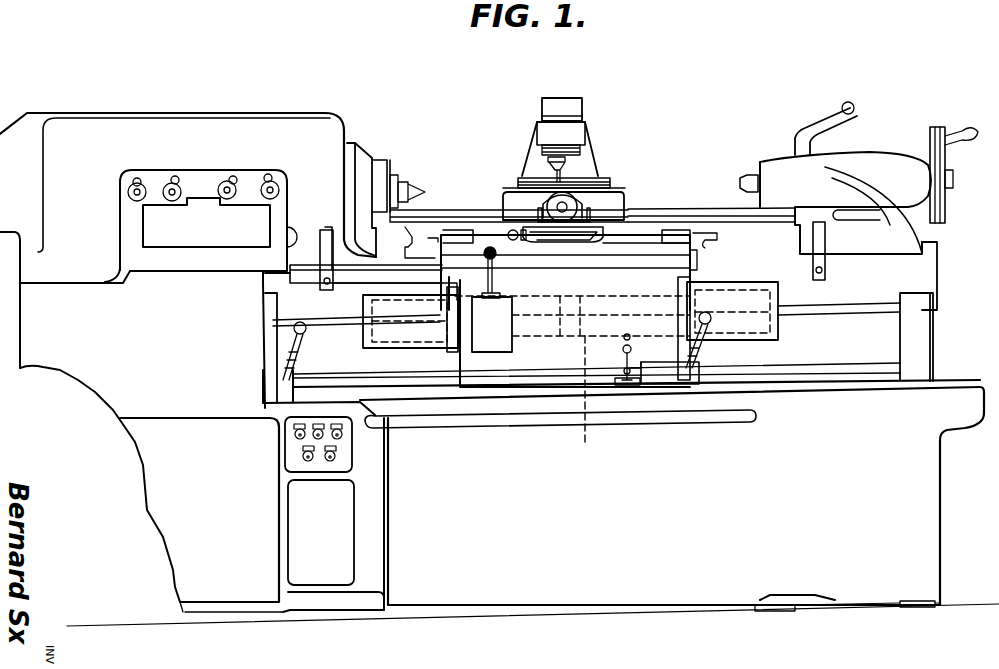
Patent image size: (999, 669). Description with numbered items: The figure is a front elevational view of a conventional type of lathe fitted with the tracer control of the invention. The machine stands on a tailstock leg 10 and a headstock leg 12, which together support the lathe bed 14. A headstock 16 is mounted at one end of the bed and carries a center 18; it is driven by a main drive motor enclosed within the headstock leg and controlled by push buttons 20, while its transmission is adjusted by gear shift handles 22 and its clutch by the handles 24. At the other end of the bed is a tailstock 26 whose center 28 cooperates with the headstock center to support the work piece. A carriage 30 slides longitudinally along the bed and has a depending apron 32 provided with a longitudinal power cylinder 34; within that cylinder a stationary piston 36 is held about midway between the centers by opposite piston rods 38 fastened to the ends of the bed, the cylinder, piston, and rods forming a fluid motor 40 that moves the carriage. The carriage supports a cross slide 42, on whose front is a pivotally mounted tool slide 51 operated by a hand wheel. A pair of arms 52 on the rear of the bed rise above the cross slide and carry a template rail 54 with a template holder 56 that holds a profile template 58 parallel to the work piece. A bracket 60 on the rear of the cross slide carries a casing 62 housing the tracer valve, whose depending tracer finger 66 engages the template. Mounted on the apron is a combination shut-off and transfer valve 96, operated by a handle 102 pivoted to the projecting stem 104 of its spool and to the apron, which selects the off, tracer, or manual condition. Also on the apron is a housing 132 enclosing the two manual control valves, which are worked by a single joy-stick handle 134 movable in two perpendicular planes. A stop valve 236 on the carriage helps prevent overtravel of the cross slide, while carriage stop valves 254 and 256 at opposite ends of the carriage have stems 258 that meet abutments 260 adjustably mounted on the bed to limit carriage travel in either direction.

The tailstock leg 10 is at (847, 585).
The headstock leg 12 is at (235, 592).
The lathe bed 14 is at (930, 287).
The headstock 16 is at (245, 117).
The headstock center 18 is at (420, 190).
The push buttons 20 is at (297, 434).
The gear shift handles 22 is at (266, 176).
The clutch handles 24 is at (305, 337).
The tailstock 26 is at (888, 158).
The tailstock center 28 is at (741, 183).
The carriage 30 is at (660, 210).
The apron 32 is at (545, 378).
The longitudinal power cylinder 34 is at (413, 352).
The stationary piston 36 is at (588, 393).
The piston rods 38 is at (320, 318).
The fluid motor 40 is at (435, 352).
The cross slide 42 is at (613, 232).
The tool slide 51 is at (583, 205).
The arms 52 is at (415, 237).
The template rail 54 is at (490, 212).
The template holder 56 is at (623, 192).
The profile template 58 is at (607, 178).
The bracket 60 is at (528, 150).
The casing 62 is at (583, 115).
The tracer finger 66 is at (542, 182).
The combination shut-off and transfer valve 96 is at (672, 385).
The handle 102 is at (622, 370).
The projecting stem 104 is at (643, 385).
The housing 132 is at (502, 350).
The joy-stick handle 134 is at (497, 285).
The stop valve 236 is at (509, 238).
The carriage stop valve 254 is at (458, 235).
The carriage stop valve 256 is at (680, 233).
The valve stems 258 is at (722, 238).
The abutments 260 is at (328, 230).